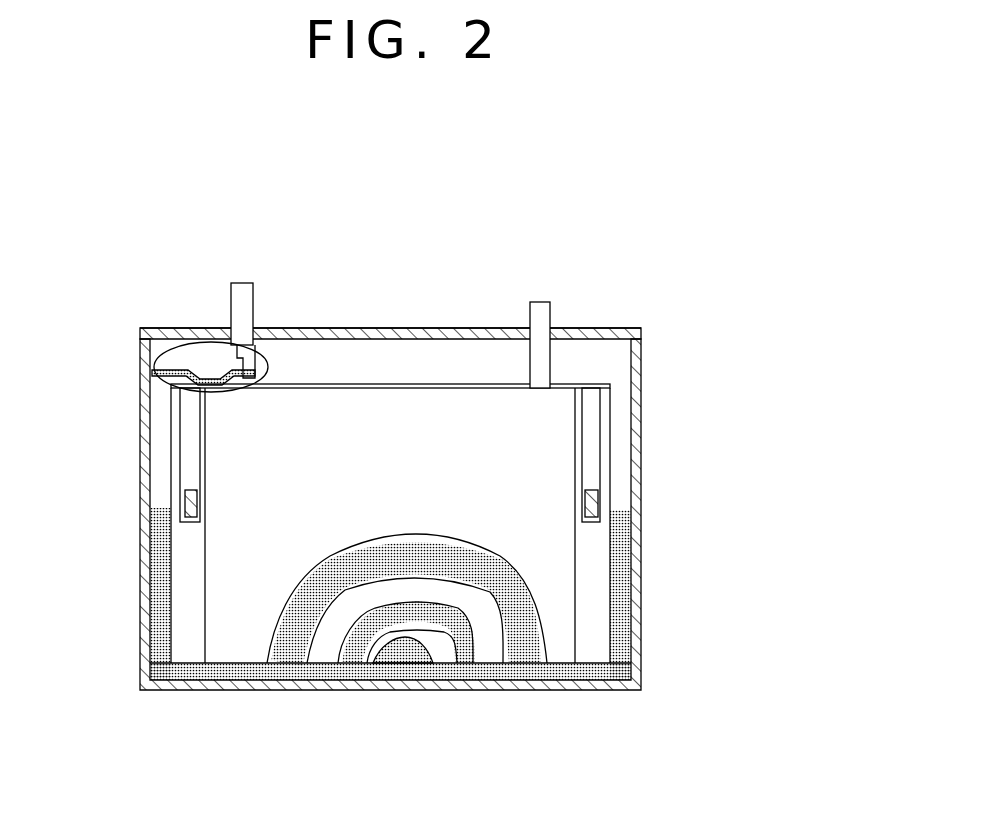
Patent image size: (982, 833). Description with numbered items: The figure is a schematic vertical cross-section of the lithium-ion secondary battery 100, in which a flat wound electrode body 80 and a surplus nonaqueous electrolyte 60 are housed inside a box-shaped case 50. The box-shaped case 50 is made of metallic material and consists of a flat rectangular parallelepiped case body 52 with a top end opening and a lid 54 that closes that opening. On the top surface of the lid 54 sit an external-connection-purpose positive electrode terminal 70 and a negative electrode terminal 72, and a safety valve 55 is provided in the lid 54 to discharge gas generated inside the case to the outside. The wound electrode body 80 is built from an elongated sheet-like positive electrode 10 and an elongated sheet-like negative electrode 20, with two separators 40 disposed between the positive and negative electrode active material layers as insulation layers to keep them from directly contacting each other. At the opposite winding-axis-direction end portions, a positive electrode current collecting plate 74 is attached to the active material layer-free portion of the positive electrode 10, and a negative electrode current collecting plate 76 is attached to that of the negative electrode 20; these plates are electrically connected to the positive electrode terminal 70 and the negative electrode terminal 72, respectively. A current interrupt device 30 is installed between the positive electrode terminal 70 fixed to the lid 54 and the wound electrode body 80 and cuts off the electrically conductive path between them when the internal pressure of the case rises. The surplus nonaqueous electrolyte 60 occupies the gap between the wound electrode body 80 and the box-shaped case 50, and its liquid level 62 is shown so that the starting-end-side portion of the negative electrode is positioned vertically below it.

The lithium-ion secondary battery 100 is at (641, 239).
The positive electrode 10 is at (281, 650).
The negative electrode 20 is at (357, 650).
The current interrupt device 30 is at (165, 347).
The separator 40 is at (233, 643).
The box-shaped case 50 is at (643, 472).
The case body 52 is at (636, 643).
The lid 54 is at (493, 328).
The safety valve 55 is at (405, 328).
The surplus nonaqueous electrolyte 60 is at (151, 630).
The liquid level 62 is at (132, 508).
The positive electrode terminal 70 is at (241, 283).
The negative electrode terminal 72 is at (540, 302).
The positive electrode current collecting plate 74 is at (192, 445).
The negative electrode current collecting plate 76 is at (590, 408).
The wound electrode body 80 is at (338, 413).